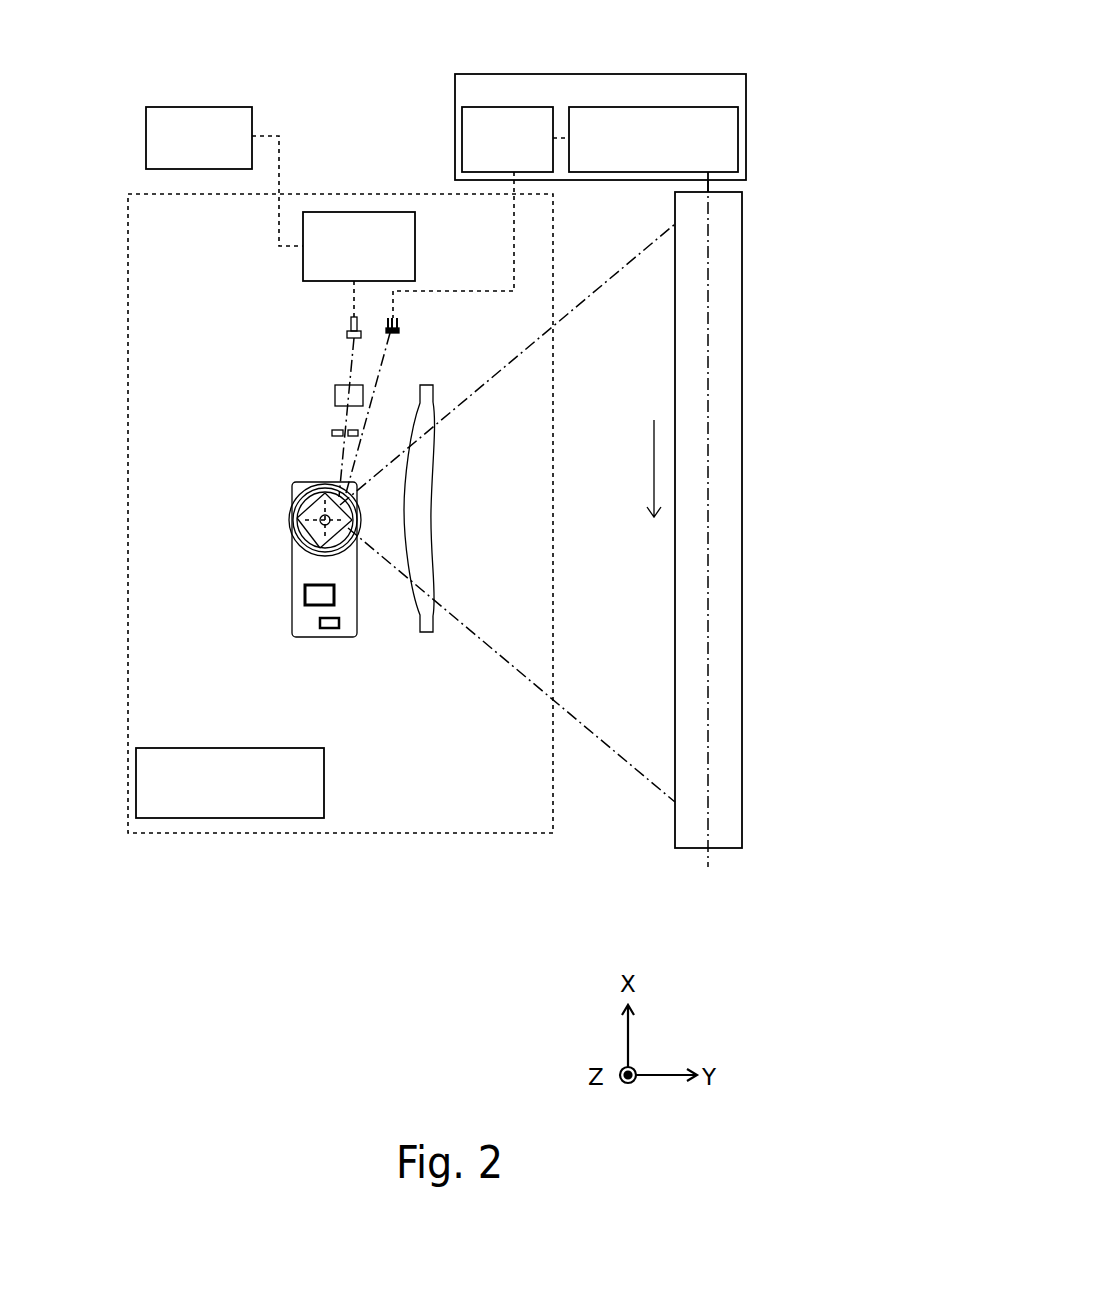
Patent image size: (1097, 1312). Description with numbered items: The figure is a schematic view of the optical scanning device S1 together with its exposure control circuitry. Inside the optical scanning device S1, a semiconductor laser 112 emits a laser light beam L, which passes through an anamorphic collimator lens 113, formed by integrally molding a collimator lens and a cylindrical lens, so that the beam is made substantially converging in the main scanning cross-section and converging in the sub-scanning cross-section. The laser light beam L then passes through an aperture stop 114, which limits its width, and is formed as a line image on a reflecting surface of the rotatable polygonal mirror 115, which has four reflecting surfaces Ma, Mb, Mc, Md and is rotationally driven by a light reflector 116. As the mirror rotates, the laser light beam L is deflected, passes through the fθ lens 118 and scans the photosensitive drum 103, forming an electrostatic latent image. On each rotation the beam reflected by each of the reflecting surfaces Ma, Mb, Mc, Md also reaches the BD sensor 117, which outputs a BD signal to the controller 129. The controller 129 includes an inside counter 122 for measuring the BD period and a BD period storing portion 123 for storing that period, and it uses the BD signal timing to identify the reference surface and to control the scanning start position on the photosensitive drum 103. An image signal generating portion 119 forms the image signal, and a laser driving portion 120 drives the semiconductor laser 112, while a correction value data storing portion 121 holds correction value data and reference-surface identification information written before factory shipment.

The photosensitive drum 103 is at (735, 540).
The semiconductor laser 112 is at (350, 333).
The anamorphic collimator lens 113 is at (335, 396).
The aperture stop 114 is at (333, 433).
The rotatable polygonal mirror 115 is at (282, 520).
The light reflector 116 is at (308, 634).
The writing position synchronizing signal detecting sensor (BD sensor) 117 is at (400, 326).
The fθ lens 118 is at (427, 525).
The image signal generating portion 119 is at (195, 107).
The laser driving portion 120 is at (356, 212).
The correction value data storing portion 121 is at (210, 818).
The inside counter 122 is at (507, 107).
The BD period storing portion 123 is at (662, 107).
The controller 129 is at (585, 74).
The laser light beam L is at (352, 362).
The optical scanning device S1 is at (160, 340).
The reflecting surface Ma is at (336, 482).
The reflecting surface Mb is at (298, 490).
The reflecting surface Mc is at (294, 549).
The reflecting surface Md is at (340, 552).